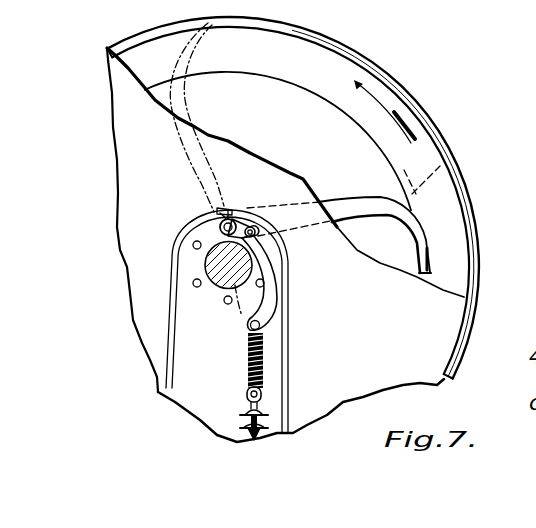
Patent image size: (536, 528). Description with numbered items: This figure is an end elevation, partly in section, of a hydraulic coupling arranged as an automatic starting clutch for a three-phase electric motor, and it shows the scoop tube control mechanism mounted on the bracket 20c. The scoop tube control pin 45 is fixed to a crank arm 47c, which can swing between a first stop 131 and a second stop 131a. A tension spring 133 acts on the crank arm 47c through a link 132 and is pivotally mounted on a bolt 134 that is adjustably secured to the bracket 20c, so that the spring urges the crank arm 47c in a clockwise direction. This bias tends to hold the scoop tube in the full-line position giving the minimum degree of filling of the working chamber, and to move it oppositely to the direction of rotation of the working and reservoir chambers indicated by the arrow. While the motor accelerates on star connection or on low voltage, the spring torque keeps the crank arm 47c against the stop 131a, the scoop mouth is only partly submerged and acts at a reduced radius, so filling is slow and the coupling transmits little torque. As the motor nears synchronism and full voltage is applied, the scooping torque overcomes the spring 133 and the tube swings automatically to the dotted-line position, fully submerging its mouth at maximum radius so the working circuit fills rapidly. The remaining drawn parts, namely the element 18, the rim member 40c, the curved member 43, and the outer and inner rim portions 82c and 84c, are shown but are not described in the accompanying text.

The shaft 18 is at (220, 263).
The bracket 20c is at (289, 356).
The rim 40c is at (470, 313).
The cam track 43 is at (353, 203).
The scoop tube control pin 45 is at (220, 223).
The crank arm 47c is at (242, 224).
The outer band 82c is at (465, 191).
The inner band 84c is at (447, 156).
The stop 131 is at (214, 211).
The stop 131a is at (255, 235).
The link 132 is at (283, 282).
The tension spring 133 is at (248, 357).
The bolt 134 is at (247, 395).